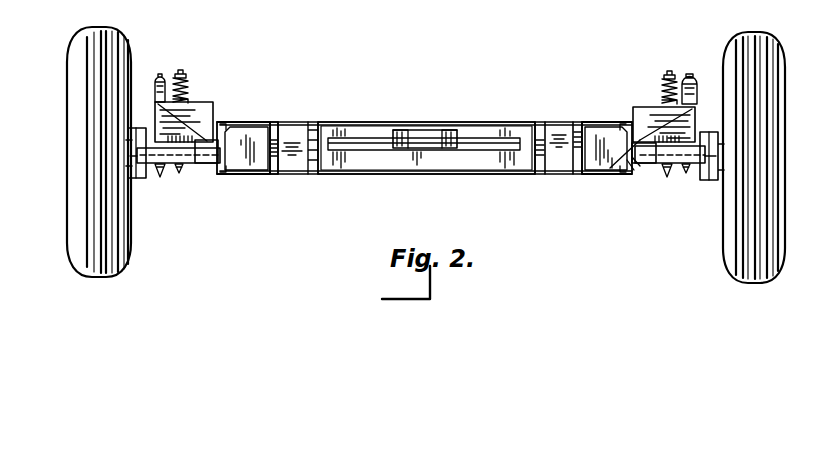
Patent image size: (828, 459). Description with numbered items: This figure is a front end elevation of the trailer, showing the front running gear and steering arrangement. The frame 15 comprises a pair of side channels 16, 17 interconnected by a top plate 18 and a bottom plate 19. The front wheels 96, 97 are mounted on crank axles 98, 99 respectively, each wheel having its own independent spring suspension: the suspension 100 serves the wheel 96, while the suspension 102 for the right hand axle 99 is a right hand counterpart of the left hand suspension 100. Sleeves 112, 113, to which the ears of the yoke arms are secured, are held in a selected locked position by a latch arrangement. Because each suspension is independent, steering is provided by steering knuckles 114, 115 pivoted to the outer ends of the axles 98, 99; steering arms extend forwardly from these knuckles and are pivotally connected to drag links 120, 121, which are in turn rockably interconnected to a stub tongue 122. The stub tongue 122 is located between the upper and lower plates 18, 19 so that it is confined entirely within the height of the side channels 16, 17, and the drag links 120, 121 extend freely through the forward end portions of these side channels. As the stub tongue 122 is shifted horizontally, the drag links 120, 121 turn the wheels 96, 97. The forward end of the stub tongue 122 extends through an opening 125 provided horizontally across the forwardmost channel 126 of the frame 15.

The frame 15 is at (331, 121).
The side channel 16 is at (229, 176).
The side channel 17 is at (600, 178).
The top plate 18 is at (493, 122).
The bottom plate 19 is at (481, 176).
The front wheel 96 is at (773, 266).
The front wheel 97 is at (90, 274).
The crank axle 98 is at (683, 162).
The crank axle 99 is at (183, 148).
The spring suspension 100 is at (650, 86).
The spring suspension 102 is at (196, 104).
The sleeve 112 is at (625, 166).
The sleeve 113 is at (231, 121).
The steering knuckle 114 is at (715, 132).
The steering knuckle 115 is at (134, 128).
The drag link 120 is at (653, 156).
The drag link 121 is at (203, 163).
The stub tongue 122 is at (423, 137).
The opening 125 is at (388, 151).
The forwardmost channel 126 is at (597, 137).